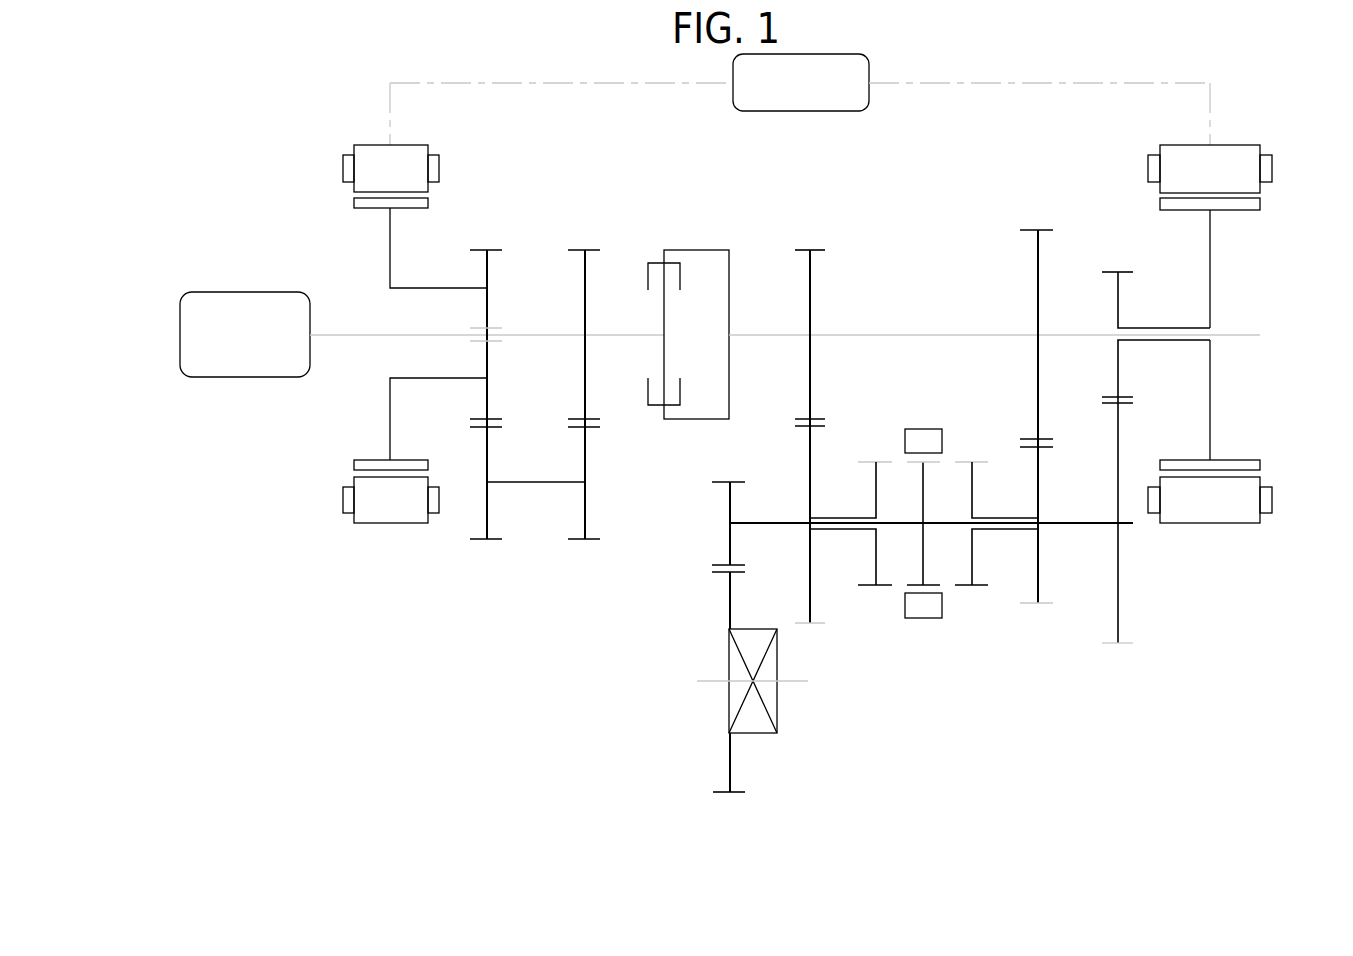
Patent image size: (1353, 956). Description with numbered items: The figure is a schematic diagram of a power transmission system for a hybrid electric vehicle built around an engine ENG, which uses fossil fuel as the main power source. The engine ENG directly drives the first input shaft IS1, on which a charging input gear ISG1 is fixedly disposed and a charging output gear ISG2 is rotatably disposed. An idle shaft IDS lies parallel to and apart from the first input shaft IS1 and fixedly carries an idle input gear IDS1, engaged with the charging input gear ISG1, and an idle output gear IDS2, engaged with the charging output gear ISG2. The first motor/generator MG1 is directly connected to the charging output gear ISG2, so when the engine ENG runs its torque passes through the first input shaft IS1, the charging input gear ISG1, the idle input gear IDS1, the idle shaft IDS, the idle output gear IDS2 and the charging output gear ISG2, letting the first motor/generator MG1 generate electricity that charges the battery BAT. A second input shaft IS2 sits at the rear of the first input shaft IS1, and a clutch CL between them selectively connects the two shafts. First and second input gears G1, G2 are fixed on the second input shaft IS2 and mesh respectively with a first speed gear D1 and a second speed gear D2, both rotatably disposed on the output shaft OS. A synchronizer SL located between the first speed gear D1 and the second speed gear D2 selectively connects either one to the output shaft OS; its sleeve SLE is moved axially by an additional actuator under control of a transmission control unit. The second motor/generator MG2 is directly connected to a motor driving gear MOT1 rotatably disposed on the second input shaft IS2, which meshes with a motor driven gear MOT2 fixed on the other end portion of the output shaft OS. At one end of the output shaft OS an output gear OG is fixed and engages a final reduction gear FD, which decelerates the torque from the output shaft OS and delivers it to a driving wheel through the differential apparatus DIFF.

The engine ENG is at (245, 334).
The battery BAT is at (800, 99).
The first motor/generator MG1 is at (415, 334).
The second motor/generator MG2 is at (1210, 334).
The first input shaft IS1 is at (344, 336).
The second input shaft IS2 is at (923, 337).
The charging input gear ISG1 is at (587, 270).
The charging output gear ISG2 is at (490, 268).
The idle shaft IDS is at (534, 480).
The idle input gear IDS1 is at (587, 514).
The idle output gear IDS2 is at (489, 510).
The clutch CL is at (686, 276).
The first input gear G1 is at (812, 268).
The second input gear G2 is at (1035, 268).
The first speed gear D1 is at (808, 447).
The second speed gear D2 is at (1040, 462).
The synchronizer SL is at (953, 600).
The sleeve SLE is at (923, 620).
The output shaft OS is at (1075, 526).
The output gear OG is at (727, 498).
The final reduction gear FD is at (727, 600).
The differential apparatus DIFF is at (778, 706).
The motor driving gear MOT1 is at (1120, 290).
The motor driven gear MOT2 is at (1120, 425).